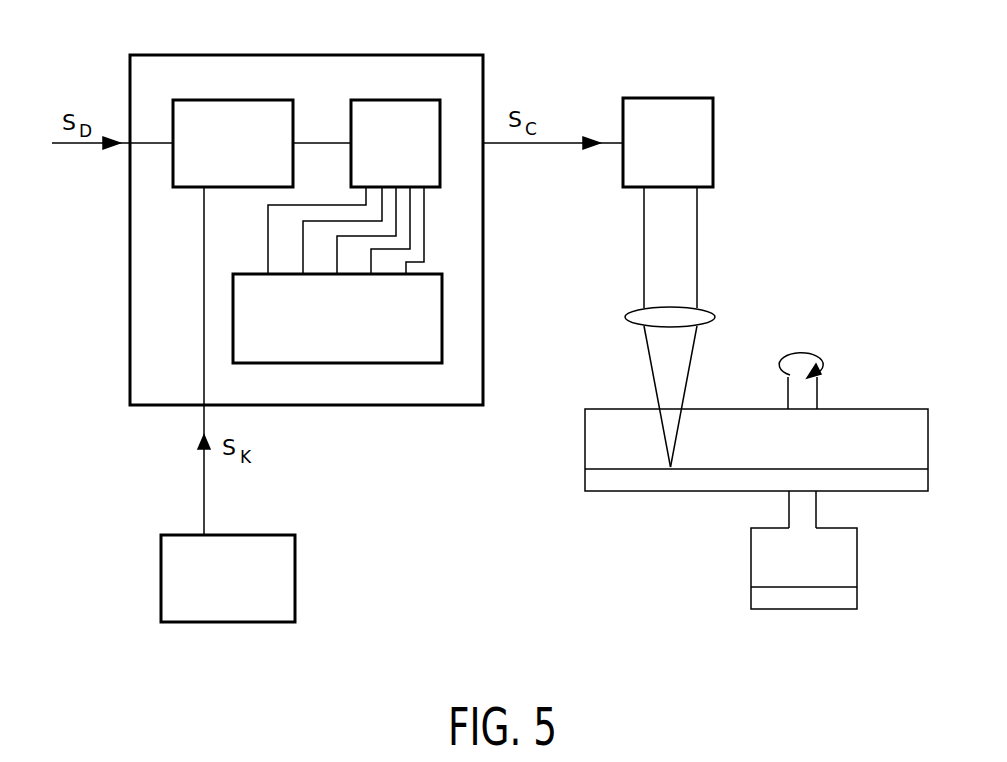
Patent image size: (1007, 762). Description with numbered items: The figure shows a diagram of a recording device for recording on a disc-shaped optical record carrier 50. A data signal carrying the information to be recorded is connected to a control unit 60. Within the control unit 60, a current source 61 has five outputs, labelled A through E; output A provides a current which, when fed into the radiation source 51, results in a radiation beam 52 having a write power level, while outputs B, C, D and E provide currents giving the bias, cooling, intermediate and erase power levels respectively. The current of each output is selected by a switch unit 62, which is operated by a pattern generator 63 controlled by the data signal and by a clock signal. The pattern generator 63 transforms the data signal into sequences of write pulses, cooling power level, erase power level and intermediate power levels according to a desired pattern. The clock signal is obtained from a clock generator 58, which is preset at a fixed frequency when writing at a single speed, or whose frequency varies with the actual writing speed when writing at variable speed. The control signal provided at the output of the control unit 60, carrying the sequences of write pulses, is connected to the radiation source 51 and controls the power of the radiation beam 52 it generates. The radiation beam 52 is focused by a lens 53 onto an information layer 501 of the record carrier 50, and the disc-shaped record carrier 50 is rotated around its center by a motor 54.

The record carrier 50 is at (898, 420).
The information layer 501 is at (911, 478).
The radiation source 51 is at (703, 120).
The radiation beam 52 is at (682, 246).
The lens 53 is at (714, 317).
The motor 54 is at (760, 552).
The clock generator 58 is at (193, 608).
The control unit 60 is at (458, 395).
The current source 61 is at (380, 352).
The switch unit 62 is at (398, 112).
The pattern generator 63 is at (235, 112).